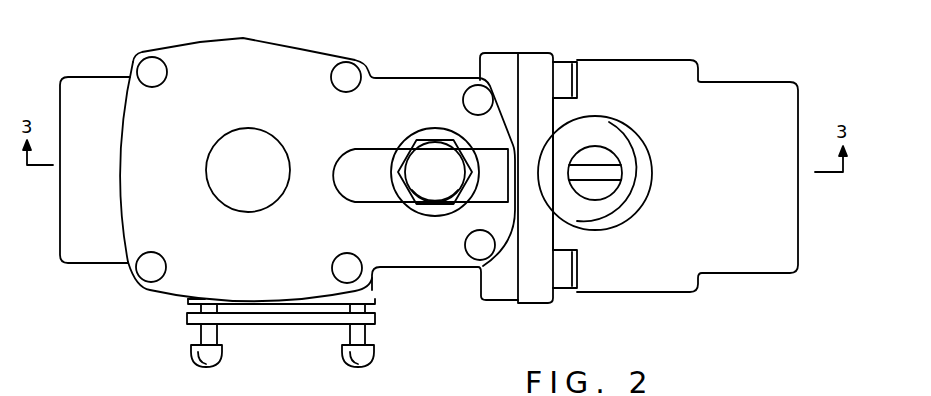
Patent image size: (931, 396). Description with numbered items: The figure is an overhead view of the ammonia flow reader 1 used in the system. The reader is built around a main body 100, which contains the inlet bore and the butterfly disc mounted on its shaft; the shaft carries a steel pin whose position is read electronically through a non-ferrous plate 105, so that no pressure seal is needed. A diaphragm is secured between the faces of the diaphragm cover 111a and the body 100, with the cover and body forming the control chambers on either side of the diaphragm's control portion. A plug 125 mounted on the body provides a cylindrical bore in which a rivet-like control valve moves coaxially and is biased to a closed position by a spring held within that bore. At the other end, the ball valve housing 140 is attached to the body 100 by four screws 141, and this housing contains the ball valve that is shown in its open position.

The ammonia flow reader 1 is at (316, 44).
The main body 100 is at (90, 85).
The non-ferrous plate 105 is at (263, 318).
The diaphragm cover 111a is at (181, 283).
The plug 125 is at (417, 157).
The ball valve housing 140 is at (645, 68).
The screws 141 is at (563, 278).